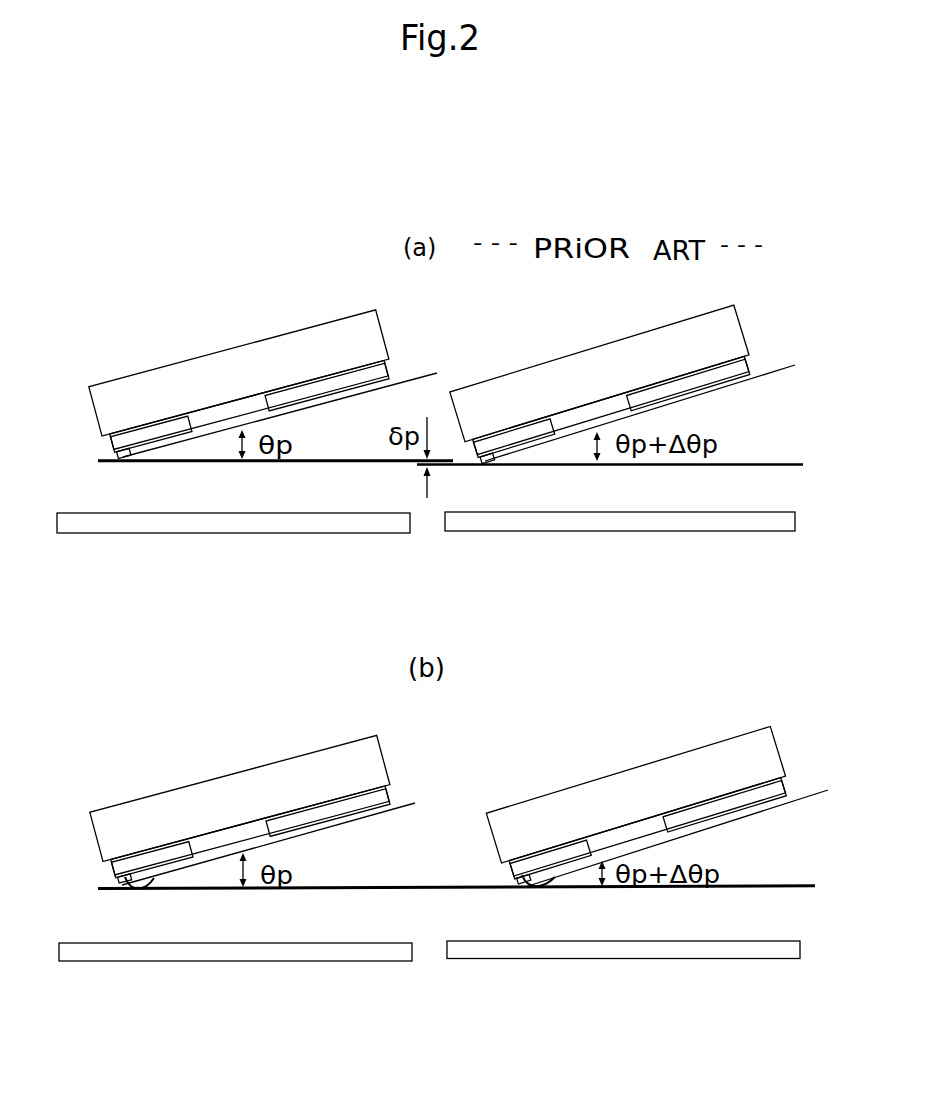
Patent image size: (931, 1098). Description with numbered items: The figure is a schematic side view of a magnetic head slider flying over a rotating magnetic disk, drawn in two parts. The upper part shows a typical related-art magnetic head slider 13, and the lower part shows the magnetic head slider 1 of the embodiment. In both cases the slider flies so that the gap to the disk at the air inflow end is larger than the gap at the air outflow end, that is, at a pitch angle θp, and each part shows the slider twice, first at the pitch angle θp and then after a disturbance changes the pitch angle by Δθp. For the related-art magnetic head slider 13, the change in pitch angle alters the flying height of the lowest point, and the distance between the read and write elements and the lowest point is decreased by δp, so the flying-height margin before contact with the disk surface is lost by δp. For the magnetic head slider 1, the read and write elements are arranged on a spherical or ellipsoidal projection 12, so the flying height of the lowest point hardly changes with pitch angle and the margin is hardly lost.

The magnetic head slider 1 is at (180, 805).
The spherical or ellipsoidal projection 12 is at (153, 883).
The magnetic head slider 13 is at (180, 378).